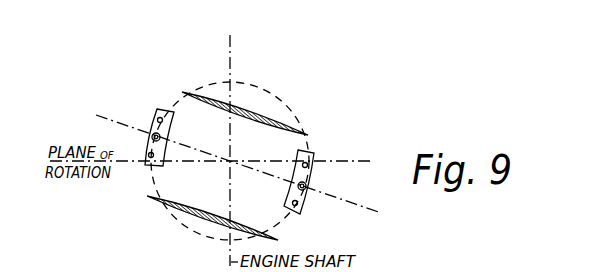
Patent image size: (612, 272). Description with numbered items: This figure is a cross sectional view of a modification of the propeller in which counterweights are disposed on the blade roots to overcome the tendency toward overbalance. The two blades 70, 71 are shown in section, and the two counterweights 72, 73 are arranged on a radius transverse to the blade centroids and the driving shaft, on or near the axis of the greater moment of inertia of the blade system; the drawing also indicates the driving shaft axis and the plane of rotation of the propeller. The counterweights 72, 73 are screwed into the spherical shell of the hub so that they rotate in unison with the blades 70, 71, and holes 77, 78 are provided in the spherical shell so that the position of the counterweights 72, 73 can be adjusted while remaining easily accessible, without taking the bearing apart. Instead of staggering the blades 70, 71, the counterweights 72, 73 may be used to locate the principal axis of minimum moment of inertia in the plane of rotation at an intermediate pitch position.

The blade 70 is at (253, 111).
The blade 71 is at (202, 213).
The counterweight 72 is at (313, 185).
The counterweight 73 is at (152, 138).
The hole 77 is at (307, 165).
The hole 78 is at (159, 118).